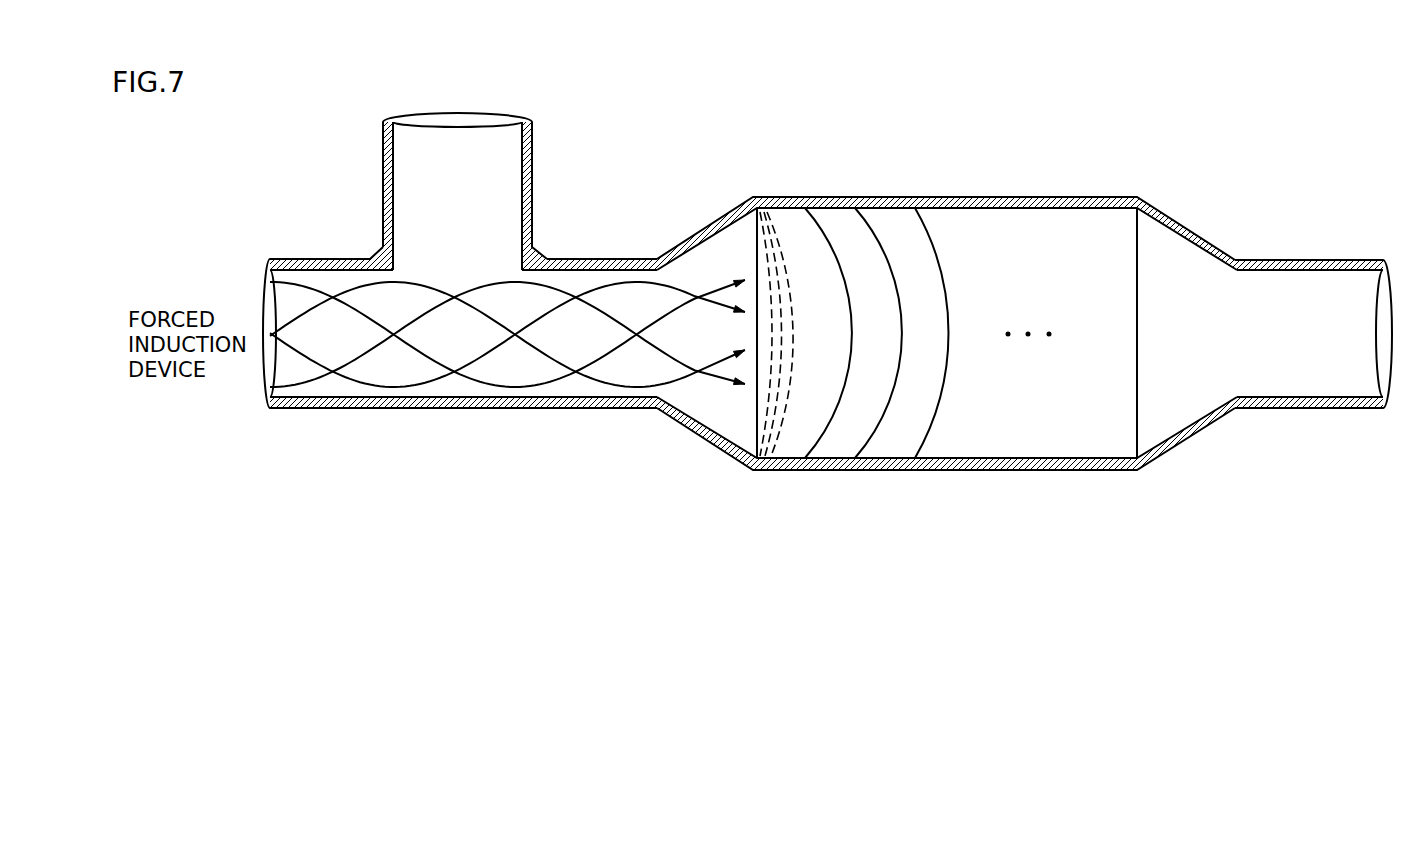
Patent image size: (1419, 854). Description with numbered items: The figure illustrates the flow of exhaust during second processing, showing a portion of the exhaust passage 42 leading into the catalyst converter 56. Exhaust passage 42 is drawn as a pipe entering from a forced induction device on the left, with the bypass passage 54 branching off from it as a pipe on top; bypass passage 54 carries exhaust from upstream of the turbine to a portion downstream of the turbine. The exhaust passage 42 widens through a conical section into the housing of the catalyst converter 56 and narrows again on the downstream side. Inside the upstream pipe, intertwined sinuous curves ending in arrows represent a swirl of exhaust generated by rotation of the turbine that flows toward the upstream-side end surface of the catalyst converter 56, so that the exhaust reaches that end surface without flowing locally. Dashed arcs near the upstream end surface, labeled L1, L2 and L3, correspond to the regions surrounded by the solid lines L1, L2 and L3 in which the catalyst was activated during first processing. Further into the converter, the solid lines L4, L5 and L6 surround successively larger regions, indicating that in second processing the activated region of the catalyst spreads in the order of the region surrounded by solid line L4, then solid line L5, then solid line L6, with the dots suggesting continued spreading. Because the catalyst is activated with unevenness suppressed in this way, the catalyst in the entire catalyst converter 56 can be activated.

The exhaust passage 42 is at (1320, 258).
The bypass passage 54 is at (533, 173).
The catalyst converter 56 is at (815, 157).
The solid line L1 is at (772, 279).
The solid line L2 is at (783, 315).
The solid line L3 is at (790, 374).
The solid line L4 is at (852, 313).
The solid line L5 is at (902, 293).
The solid line L6 is at (950, 275).